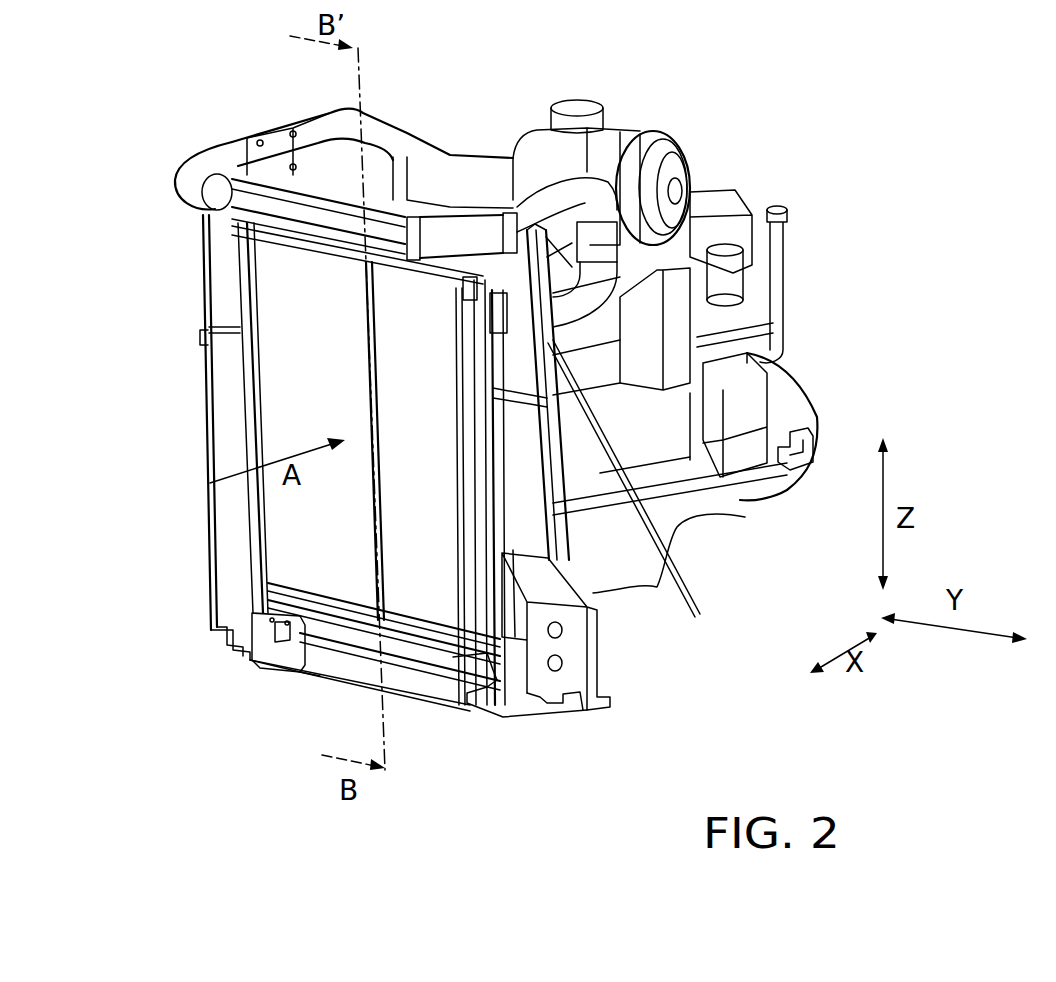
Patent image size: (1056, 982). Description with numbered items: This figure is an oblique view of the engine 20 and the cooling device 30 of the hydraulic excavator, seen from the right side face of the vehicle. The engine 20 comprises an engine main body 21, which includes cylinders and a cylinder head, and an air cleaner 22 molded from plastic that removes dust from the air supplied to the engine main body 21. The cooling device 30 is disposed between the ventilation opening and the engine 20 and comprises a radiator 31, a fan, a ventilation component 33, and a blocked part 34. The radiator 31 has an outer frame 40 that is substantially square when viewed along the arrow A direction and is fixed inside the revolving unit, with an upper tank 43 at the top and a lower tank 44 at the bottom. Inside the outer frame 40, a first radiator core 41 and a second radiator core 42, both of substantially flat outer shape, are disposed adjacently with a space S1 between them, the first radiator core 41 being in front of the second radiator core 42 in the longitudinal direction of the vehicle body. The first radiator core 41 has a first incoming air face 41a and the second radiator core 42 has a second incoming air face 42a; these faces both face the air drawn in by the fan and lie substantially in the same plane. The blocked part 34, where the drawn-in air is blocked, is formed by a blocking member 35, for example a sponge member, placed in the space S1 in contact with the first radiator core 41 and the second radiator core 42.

The engine 20 is at (516, 101).
The engine main body 21 is at (663, 407).
The air cleaner 22 is at (617, 140).
The cooling device 30 is at (235, 103).
The radiator 31 is at (208, 138).
The ventilation component 33 is at (370, 330).
The blocked part 34 is at (370, 493).
The blocking member 35 is at (370, 395).
The outer frame 40 is at (211, 290).
The first radiator core 41 is at (413, 417).
The first incoming air face 41a is at (447, 580).
The second radiator core 42 is at (295, 375).
The second incoming air face 42a is at (323, 563).
The upper tank 43 is at (297, 227).
The lower tank 44 is at (343, 630).
The space S1 is at (387, 283).